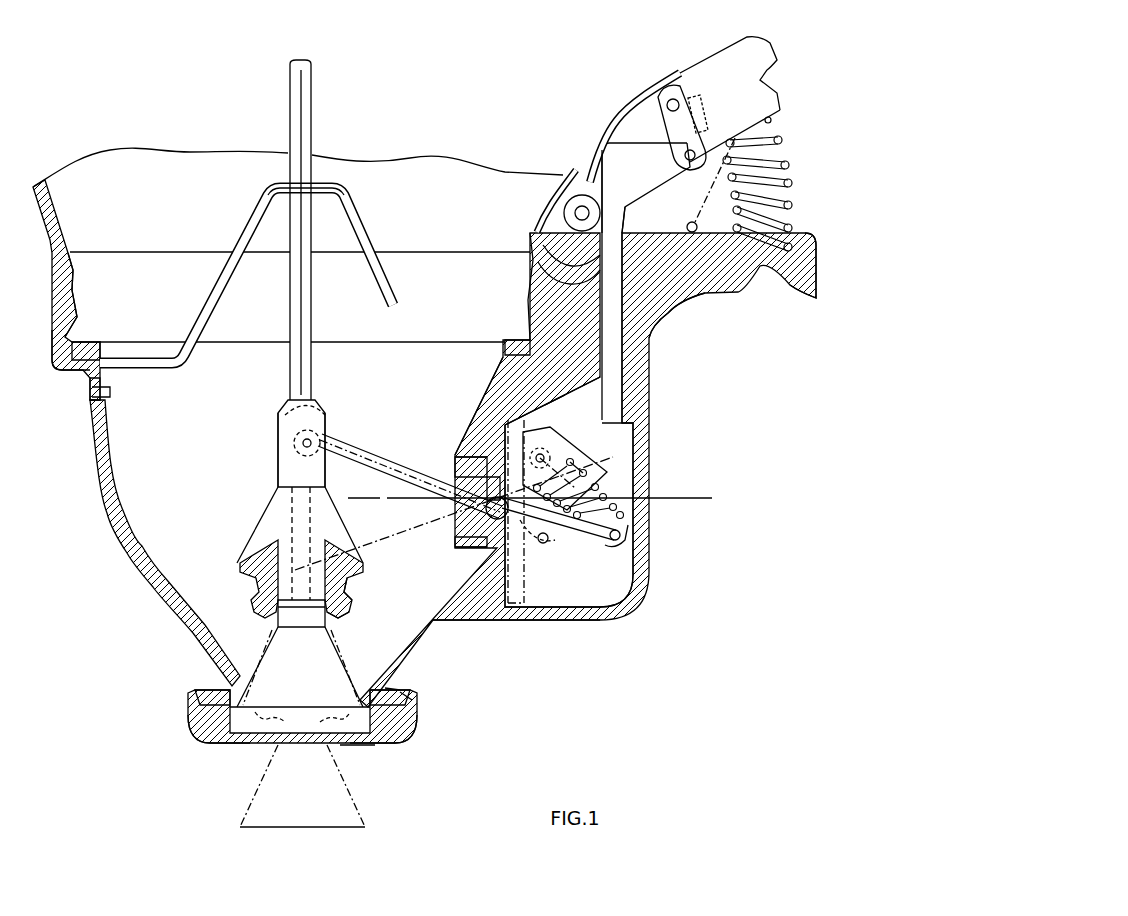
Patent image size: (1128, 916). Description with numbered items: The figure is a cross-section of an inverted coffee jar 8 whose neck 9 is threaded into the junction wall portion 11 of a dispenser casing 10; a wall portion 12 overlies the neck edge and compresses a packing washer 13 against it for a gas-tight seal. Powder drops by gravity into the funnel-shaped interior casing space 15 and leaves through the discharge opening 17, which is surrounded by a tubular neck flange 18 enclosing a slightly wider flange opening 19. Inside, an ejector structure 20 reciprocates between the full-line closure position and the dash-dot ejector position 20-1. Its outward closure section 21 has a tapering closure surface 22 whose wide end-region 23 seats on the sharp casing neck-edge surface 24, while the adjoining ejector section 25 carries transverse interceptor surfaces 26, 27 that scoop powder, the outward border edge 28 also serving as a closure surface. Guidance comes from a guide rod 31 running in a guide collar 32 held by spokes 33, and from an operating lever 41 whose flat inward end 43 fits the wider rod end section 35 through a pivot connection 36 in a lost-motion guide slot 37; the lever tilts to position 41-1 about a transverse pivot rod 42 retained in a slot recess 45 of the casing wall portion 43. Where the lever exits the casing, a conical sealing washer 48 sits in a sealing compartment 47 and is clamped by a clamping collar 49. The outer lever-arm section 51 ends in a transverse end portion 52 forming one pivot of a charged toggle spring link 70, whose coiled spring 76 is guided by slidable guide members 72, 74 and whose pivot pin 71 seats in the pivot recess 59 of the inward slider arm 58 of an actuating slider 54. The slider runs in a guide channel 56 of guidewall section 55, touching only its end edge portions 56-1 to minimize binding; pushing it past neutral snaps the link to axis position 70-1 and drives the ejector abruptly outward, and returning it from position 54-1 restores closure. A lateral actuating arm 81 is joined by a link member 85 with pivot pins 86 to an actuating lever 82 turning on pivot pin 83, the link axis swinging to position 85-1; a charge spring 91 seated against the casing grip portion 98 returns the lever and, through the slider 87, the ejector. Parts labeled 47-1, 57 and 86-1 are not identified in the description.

The coffee jar 8 is at (58, 230).
The jar neck 9 is at (73, 272).
The dispenser casing 10 is at (97, 533).
The junction wall portion 11 is at (52, 350).
The wall portion 12 is at (80, 373).
The packing washer 13 is at (92, 342).
The interior casing space 15 is at (110, 492).
The discharge opening 17 is at (245, 742).
The neck flange 18 is at (405, 728).
The flange opening 19 is at (378, 743).
The ejector structure 20 is at (229, 425).
The ejector position 20-1 is at (245, 785).
The outward closure section 21 is at (276, 652).
The closure surface 22 is at (258, 674).
The outward end-region 23 is at (345, 743).
The casing neck-edge surface 24 is at (215, 688).
The ejector section 25 is at (263, 515).
The interceptor surface 26 is at (332, 612).
The interceptor surface 27 is at (352, 594).
The outward border edge 28 is at (350, 574).
The guide rod 31 is at (311, 318).
The guide collar 32 is at (322, 183).
The spokes 33 is at (226, 252).
The inward end section 35 is at (278, 470).
The pivot connection 36 is at (313, 443).
The guide slot 37 is at (296, 440).
The operating lever 41 is at (402, 470).
The lever ejector position 41-1 is at (408, 530).
The lever pivot rod 42 is at (488, 500).
The inward pivot end 43 is at (322, 420).
The slot recess 45 is at (545, 544).
The sealing compartment 47 is at (464, 458).
The bearing flange 47-1 is at (470, 455).
The sealing washer 48 is at (462, 536).
The clamping collar 49 is at (460, 548).
The outer lever-arm section 51 is at (568, 527).
The outer lever end portion 52 is at (613, 548).
The actuating slider 54 is at (525, 262).
The slider ejector position 54-1 is at (540, 615).
The guidewall section 55 is at (527, 290).
The guide channel 56 is at (564, 216).
The channel end edge portion 56-1 is at (623, 348).
The actuating arm 57 is at (594, 170).
The inward slider arm 58 is at (497, 382).
The pivot recess 59 is at (556, 410).
The toggle spring link 70 is at (611, 444).
The toggle link ejector position 70-1 is at (527, 566).
The pivot pin 71 is at (550, 450).
The spring guide member 72 is at (553, 460).
The spring guide member 74 is at (597, 490).
The coiled spring 76 is at (625, 505).
The lateral actuating arm 81 is at (605, 160).
The actuating lever 82 is at (712, 58).
The pivot pin 83 is at (560, 206).
The link member 85 is at (660, 120).
The link ejector position 85-1 is at (656, 207).
The pivot pins 86 is at (672, 99).
The lug 86-1 is at (690, 282).
The actuating slider 87 is at (760, 110).
The charge spring 91 is at (782, 140).
The grip portion 98 is at (780, 288).